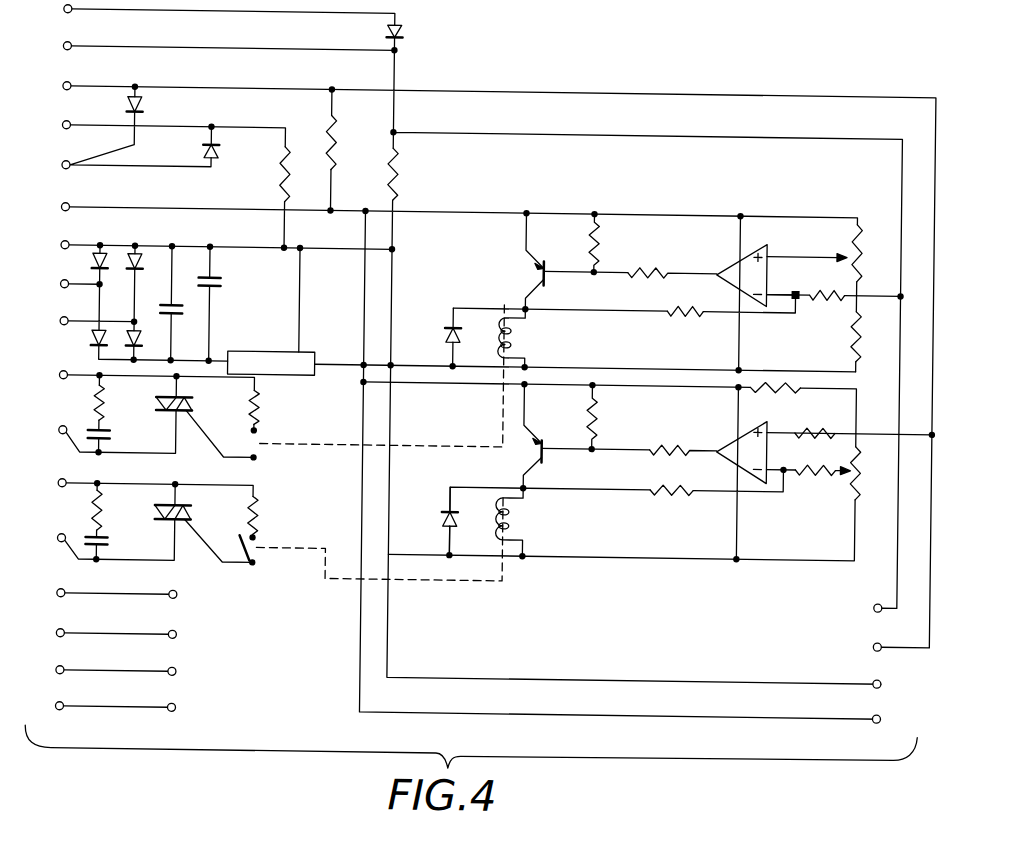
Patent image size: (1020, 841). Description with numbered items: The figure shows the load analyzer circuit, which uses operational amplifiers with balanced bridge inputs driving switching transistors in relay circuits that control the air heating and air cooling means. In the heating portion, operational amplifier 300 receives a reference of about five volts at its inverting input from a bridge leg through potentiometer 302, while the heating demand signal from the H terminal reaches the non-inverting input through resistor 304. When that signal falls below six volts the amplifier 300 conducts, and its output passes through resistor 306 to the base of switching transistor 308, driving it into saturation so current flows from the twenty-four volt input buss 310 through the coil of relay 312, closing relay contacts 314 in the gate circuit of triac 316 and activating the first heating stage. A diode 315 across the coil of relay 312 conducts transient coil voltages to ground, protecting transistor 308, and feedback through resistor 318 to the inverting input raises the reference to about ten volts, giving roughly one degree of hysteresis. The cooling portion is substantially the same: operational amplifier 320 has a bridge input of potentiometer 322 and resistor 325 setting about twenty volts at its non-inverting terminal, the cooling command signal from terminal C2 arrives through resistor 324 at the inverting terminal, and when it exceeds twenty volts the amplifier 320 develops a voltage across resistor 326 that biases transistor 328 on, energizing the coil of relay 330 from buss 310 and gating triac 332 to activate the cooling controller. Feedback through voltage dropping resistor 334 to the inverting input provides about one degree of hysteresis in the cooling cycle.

The operational amplifier 300 is at (760, 477).
The potentiometer 302 is at (853, 485).
The resistor 304 is at (814, 419).
The resistor 306 is at (668, 446).
The switching transistor 308 is at (540, 451).
The input buss 310 is at (363, 480).
The relay 312 is at (513, 531).
The relay contacts 314 is at (254, 559).
The diode 315 is at (448, 514).
The triac 316 is at (179, 526).
The feedback resistor 318 is at (669, 492).
The operational amplifier 320 is at (736, 265).
The potentiometer 322 is at (858, 236).
The resistor 324 is at (814, 294).
The resistor 325 is at (850, 349).
The resistor 326 is at (645, 266).
The transistor 328 is at (537, 269).
The relay 330 is at (513, 341).
The triac 332 is at (188, 398).
The voltage dropping resistor 334 is at (684, 315).